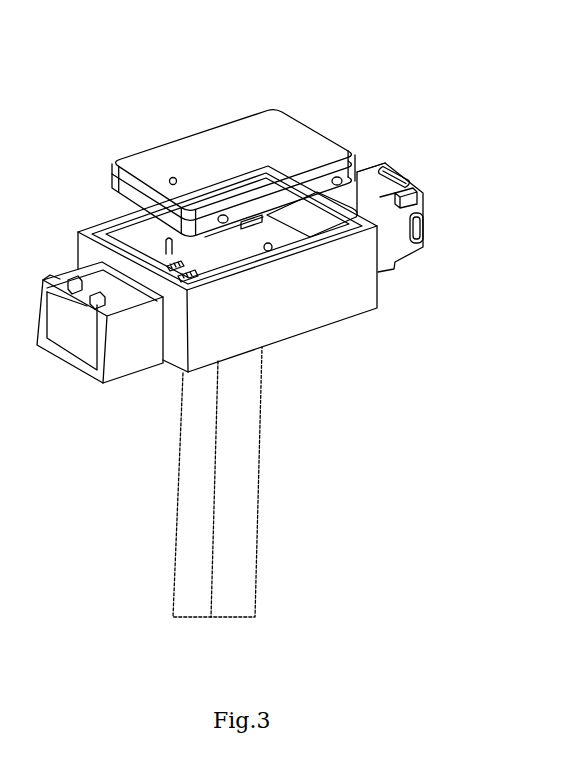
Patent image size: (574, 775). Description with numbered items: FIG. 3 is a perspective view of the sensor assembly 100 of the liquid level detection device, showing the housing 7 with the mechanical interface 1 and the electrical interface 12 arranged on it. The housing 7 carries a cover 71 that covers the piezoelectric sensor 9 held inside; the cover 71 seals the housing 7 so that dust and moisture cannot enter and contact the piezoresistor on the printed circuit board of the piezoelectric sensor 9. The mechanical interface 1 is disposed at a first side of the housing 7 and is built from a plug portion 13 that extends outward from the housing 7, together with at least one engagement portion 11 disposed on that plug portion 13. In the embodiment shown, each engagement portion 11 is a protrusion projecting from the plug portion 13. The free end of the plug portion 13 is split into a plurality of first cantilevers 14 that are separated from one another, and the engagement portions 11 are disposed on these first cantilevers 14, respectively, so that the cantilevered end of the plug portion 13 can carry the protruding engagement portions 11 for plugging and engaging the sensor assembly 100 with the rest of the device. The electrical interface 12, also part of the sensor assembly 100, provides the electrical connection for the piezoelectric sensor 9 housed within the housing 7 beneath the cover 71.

The sensor assembly 100 is at (162, 438).
The mechanical interface 1 is at (400, 249).
The housing 7 is at (328, 309).
The piezoelectric sensor 9 is at (238, 255).
The engagement portion 11 is at (389, 168).
The electrical interface 12 is at (128, 364).
The plug portion 13 is at (367, 180).
The first cantilever 14 is at (418, 203).
The cover 71 is at (196, 142).